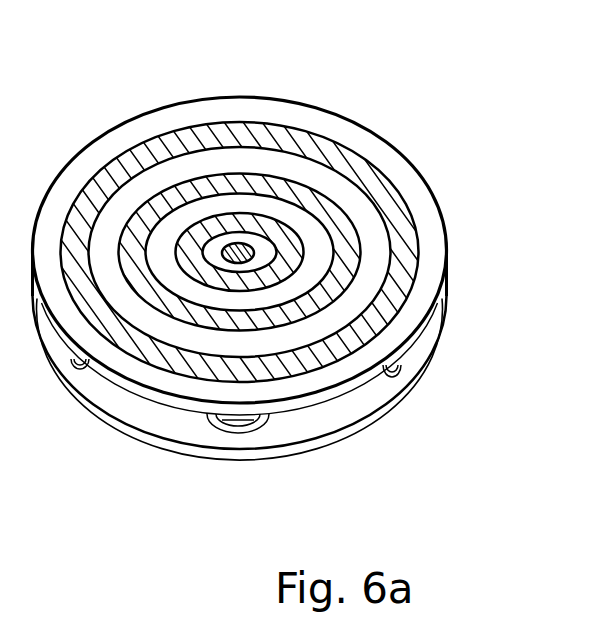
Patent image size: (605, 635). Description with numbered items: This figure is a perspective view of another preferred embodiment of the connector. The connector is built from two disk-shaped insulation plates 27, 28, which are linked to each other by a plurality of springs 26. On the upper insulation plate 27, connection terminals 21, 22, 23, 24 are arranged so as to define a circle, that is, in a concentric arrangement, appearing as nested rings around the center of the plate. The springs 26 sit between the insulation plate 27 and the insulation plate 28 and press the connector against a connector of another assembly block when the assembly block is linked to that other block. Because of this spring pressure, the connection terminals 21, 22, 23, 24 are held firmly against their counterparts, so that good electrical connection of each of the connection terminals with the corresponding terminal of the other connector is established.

The connection terminal 21 is at (205, 218).
The connection terminal 22 is at (229, 243).
The connection terminal 23 is at (258, 173).
The connection terminal 24 is at (330, 140).
The spring 26 is at (83, 371).
The insulation plate 27 is at (400, 177).
The insulation plate 28 is at (430, 367).